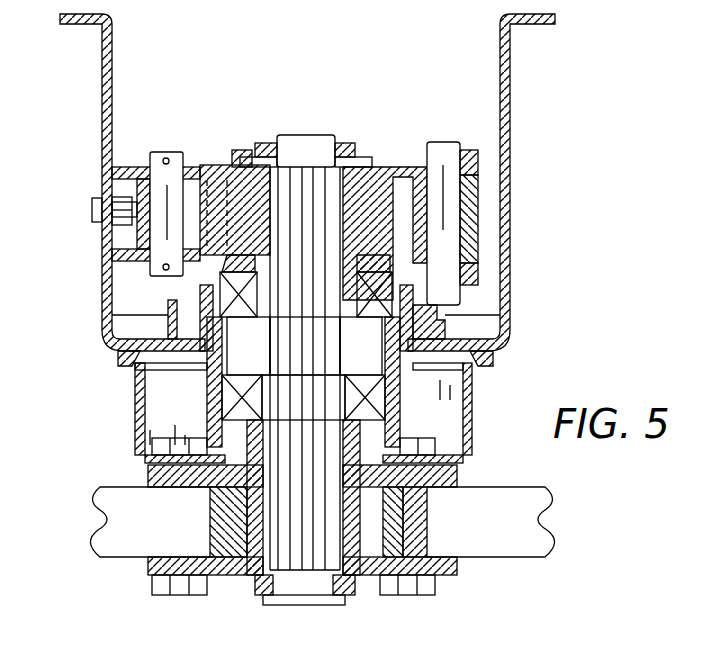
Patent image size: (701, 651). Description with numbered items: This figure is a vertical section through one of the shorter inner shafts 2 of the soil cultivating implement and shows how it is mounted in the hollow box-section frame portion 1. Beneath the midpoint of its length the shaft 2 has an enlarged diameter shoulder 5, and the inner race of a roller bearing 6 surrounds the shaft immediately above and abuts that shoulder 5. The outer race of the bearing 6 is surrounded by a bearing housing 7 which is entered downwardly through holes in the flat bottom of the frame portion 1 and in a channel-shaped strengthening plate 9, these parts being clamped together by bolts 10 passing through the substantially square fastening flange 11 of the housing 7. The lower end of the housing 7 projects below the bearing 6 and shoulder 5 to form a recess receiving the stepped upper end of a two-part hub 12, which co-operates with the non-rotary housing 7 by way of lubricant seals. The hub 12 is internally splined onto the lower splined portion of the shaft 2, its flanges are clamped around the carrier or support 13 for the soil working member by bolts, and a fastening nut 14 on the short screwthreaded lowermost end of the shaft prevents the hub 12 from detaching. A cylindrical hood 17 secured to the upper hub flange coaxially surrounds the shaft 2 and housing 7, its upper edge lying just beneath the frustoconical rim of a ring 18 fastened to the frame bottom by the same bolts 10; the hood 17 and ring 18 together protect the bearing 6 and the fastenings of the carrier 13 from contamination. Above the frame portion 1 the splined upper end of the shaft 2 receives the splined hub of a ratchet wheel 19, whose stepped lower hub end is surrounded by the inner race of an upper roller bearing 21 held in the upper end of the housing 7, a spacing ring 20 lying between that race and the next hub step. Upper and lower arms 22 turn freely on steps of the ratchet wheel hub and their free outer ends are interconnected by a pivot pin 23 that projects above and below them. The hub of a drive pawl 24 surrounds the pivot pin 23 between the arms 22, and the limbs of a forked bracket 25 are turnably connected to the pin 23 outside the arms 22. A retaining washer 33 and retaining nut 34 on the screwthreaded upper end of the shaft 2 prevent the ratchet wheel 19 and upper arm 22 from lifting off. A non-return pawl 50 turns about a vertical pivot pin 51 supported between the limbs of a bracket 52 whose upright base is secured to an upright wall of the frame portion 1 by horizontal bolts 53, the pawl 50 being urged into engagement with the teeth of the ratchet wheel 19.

The hollow box-section frame portion 1 is at (89, 66).
The shaft 2 is at (292, 135).
The enlarged diameter shoulder 5 is at (303, 427).
The roller bearing 6 is at (365, 375).
The bearing housing 7 is at (207, 395).
The strengthening plate 9 is at (168, 316).
The bolt 10 is at (200, 288).
The fastening flange 11 is at (440, 322).
The two-part hub 12 is at (455, 565).
The carrier or support 13 is at (106, 487).
The fastening nut 14 is at (250, 592).
The cylindrical hood 17 is at (450, 405).
The ring 18 is at (490, 362).
The ratchet wheel 19 is at (206, 172).
The spacing ring 20 is at (255, 265).
The upper roller bearing 21 is at (243, 318).
The arm 22 is at (380, 165).
The pivot pin 23 is at (440, 142).
The drive pawl 24 is at (478, 205).
The forked bracket 25 is at (478, 158).
The retaining washer 33 is at (240, 150).
The retaining nut 34 is at (348, 150).
The non-return pawl 50 is at (140, 232).
The pivot pin 51 is at (183, 152).
The bracket 52 is at (110, 175).
The bolt 53 is at (91, 208).